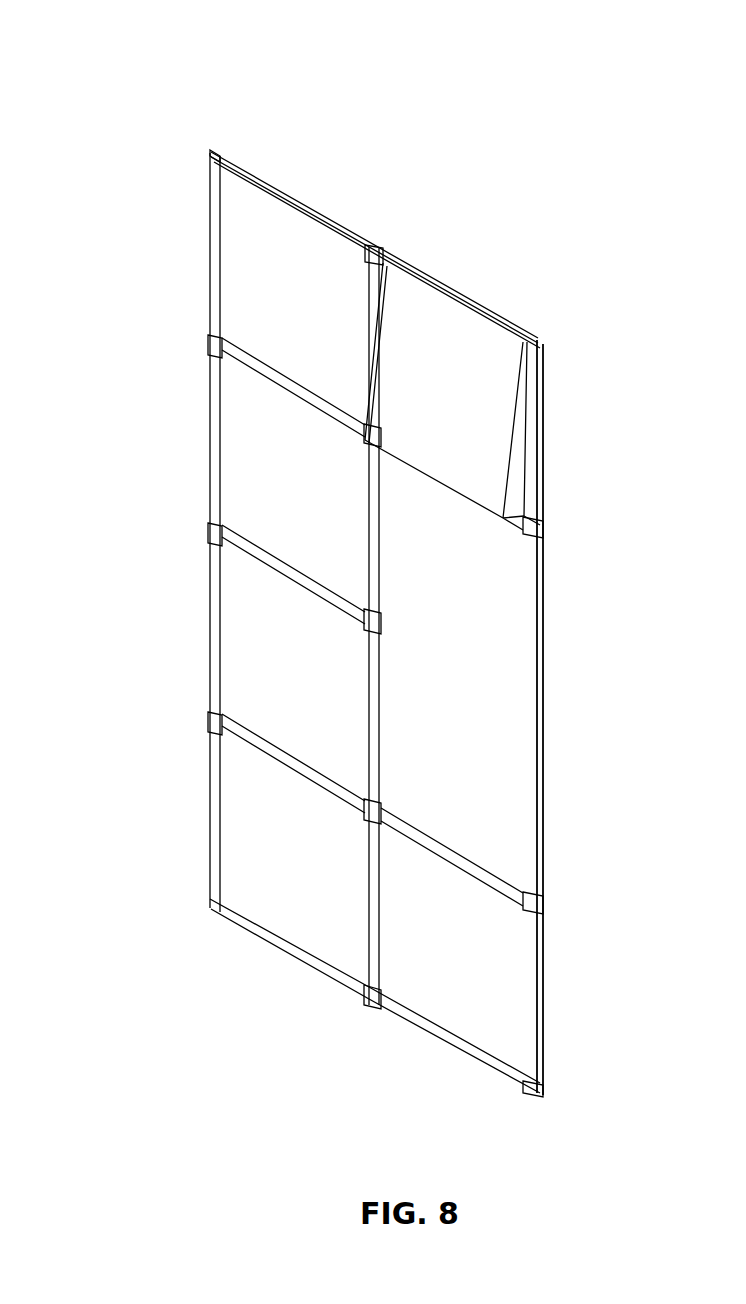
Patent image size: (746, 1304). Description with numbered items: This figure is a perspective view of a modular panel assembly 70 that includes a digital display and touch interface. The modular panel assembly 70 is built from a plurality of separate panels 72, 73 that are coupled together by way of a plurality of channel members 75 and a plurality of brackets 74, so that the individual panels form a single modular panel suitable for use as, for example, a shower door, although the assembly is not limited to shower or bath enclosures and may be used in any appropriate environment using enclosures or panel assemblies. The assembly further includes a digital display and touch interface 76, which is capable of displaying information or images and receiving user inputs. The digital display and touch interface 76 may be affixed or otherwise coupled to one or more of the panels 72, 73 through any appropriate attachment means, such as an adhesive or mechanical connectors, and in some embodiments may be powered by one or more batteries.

The modular panel assembly 70 is at (118, 86).
The panel 72 is at (278, 220).
The panel 73 is at (516, 762).
The bracket 74 is at (210, 345).
The channel member 75 is at (430, 835).
The digital display and touch interface 76 is at (498, 423).